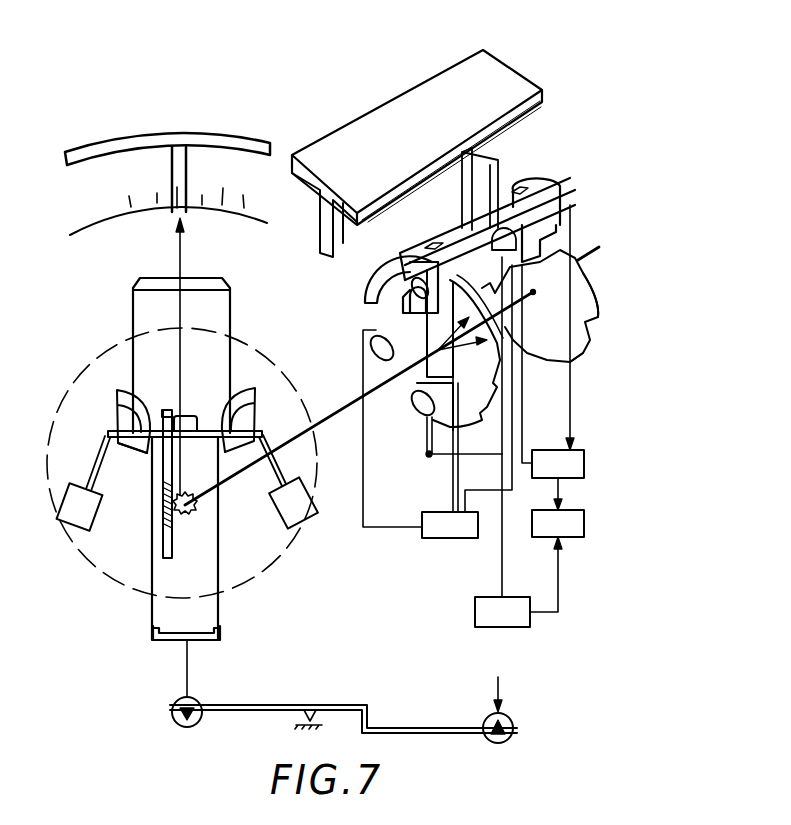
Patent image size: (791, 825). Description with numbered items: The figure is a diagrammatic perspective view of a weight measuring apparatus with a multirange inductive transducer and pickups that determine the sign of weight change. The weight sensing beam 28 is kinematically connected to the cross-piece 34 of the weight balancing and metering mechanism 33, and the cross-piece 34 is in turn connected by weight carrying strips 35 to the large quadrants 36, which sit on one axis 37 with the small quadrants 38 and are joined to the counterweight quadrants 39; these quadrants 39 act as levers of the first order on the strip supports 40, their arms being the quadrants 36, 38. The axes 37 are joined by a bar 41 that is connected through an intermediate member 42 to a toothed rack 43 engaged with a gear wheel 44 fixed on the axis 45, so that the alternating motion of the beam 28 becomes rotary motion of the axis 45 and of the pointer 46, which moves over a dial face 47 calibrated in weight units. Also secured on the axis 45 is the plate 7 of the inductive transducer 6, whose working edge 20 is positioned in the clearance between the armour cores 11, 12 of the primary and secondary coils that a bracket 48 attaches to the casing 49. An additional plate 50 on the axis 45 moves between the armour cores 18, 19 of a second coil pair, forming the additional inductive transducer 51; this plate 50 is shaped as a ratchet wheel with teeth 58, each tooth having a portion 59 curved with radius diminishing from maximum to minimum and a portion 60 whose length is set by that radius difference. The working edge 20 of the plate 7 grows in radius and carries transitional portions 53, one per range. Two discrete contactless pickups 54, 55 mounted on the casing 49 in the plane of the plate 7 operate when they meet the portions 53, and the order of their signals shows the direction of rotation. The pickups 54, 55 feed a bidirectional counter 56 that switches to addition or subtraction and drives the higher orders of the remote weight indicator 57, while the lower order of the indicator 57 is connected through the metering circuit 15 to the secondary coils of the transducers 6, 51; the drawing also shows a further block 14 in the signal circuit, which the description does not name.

The inductive transducer 6 is at (397, 257).
The plate 7 is at (372, 317).
The armour core 11 is at (417, 310).
The armour core 12 is at (487, 233).
The control unit 14 is at (450, 530).
The metering circuit 15 is at (555, 458).
The armour core 18 is at (512, 183).
The armour core 19 is at (568, 203).
The working edge 20 is at (402, 375).
The beam 28 is at (257, 703).
The mechanism for weight balancing and metering 33 is at (86, 143).
The cross-piece 34 is at (168, 640).
The weight carrying strips 35 is at (152, 612).
The large quadrants 36 is at (120, 398).
The axis 37 is at (107, 435).
The small quadrants 38 is at (117, 421).
The quadrants (counterweights) 39 is at (90, 517).
The strip supports 40 is at (133, 303).
The bar 41 is at (147, 447).
The intermediate member 42 is at (189, 414).
The toothed rack 43 is at (173, 543).
The gear wheel 44 is at (197, 510).
The axis 45 is at (328, 413).
The pointer 46 is at (180, 313).
The dial face 47 is at (98, 222).
The bracket 48 is at (442, 240).
The casing 49 is at (297, 152).
The additional plate 50 is at (555, 345).
The additional inductive transducer 51 is at (542, 175).
The transitional portions 53 is at (436, 462).
The discrete pickup 54 is at (371, 341).
The discrete pickup 55 is at (420, 417).
The bidirectional electric signal counter 56 is at (483, 613).
The remote weight indicator 57 is at (550, 530).
The teeth 58 is at (584, 248).
The portion 59 is at (593, 300).
The portion 60 is at (581, 357).